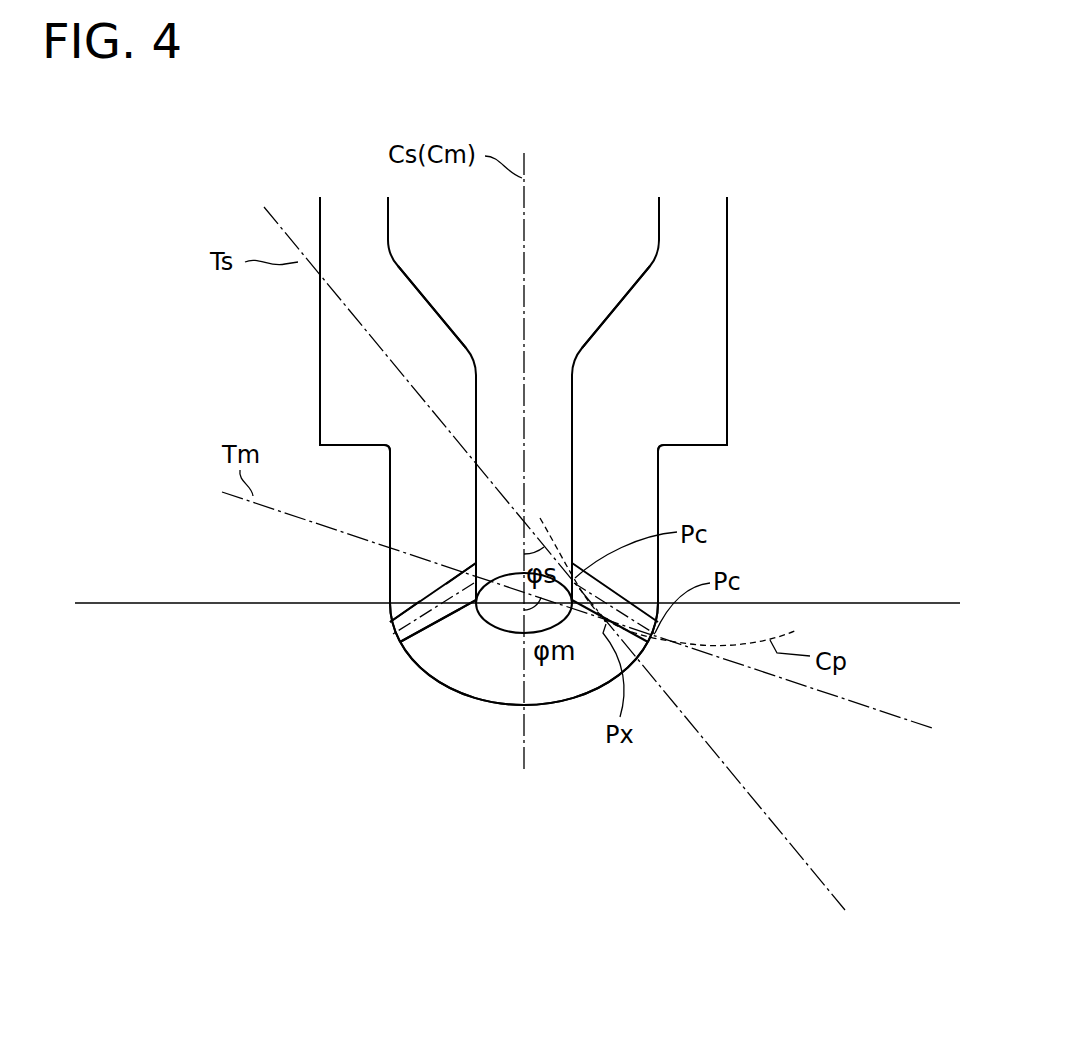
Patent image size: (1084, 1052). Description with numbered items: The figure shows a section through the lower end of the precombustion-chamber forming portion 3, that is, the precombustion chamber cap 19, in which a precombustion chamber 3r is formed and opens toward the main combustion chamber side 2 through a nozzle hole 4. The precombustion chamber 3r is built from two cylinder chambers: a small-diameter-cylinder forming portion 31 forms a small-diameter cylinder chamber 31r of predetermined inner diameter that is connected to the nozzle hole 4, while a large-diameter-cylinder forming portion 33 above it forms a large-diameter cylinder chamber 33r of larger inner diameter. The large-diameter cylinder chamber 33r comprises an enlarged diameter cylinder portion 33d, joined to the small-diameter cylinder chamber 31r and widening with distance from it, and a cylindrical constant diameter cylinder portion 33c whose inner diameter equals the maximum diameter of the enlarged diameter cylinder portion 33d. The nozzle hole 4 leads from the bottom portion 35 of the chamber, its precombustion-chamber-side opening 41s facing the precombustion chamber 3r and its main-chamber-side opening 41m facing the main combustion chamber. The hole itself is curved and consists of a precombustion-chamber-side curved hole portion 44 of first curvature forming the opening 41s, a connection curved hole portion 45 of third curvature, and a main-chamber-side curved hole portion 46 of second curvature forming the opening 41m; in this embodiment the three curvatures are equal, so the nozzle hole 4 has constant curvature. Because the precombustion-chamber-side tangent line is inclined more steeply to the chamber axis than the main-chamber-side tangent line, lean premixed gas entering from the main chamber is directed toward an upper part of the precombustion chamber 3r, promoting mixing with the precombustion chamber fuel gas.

The main combustion chamber wall 2 is at (156, 603).
The precombustion-chamber forming portion 3 is at (869, 225).
The precombustion chamber cap 19 is at (523, 451).
The precombustion chamber 3r is at (156, 332).
The small-diameter-cylinder forming portion 31 is at (573, 417).
The small-diameter cylinder chamber 31r is at (488, 417).
The large-diameter-cylinder forming portion 33 is at (825, 198).
The constant diameter cylinder portion 33c is at (659, 213).
The enlarged diameter cylinder portion 33d is at (638, 285).
The large-diameter cylinder chamber 33r is at (220, 312).
The bottom portion 35 is at (507, 634).
The nozzle hole 4 is at (480, 766).
The precombustion-chamber-side opening 41s is at (478, 570).
The main-chamber-side opening 41m is at (412, 640).
The precombustion-chamber-side curved hole portion 44 is at (471, 612).
The connection curved hole portion 45 is at (443, 620).
The main-chamber-side curved hole portion 46 is at (416, 648).